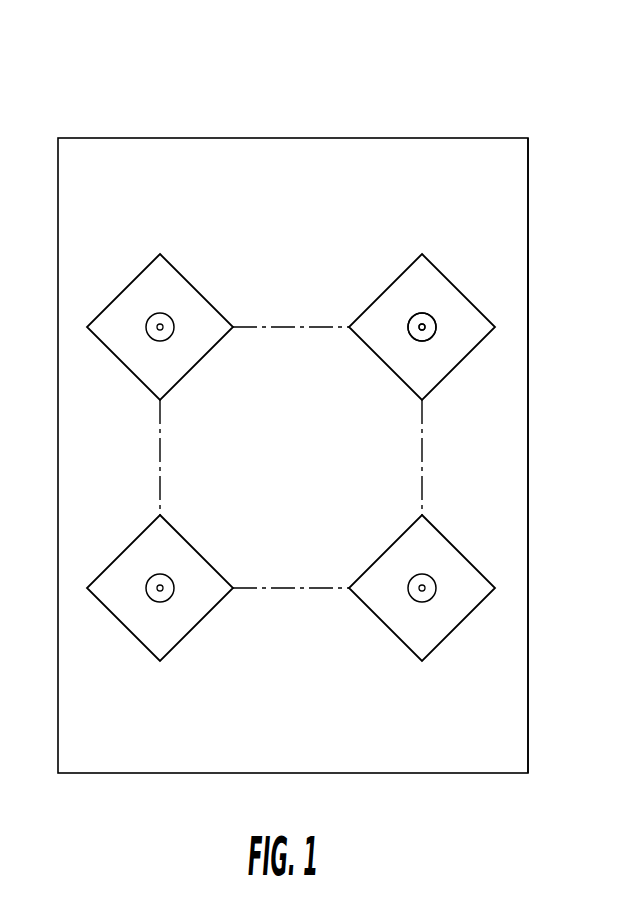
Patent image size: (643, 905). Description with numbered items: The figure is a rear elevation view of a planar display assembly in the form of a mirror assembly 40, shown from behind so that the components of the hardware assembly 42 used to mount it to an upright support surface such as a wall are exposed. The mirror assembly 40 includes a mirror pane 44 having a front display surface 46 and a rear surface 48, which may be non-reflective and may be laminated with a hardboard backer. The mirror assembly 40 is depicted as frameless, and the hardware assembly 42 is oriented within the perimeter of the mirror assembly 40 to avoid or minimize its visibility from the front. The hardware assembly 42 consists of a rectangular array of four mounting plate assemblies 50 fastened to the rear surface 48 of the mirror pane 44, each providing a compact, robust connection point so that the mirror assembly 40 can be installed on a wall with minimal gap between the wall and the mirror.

The mirror assembly 40 is at (395, 130).
The hardware assembly 42 is at (468, 285).
The mirror pane 44 is at (530, 172).
The front display surface 46 is at (530, 294).
The rear surface 48 is at (266, 220).
The mounting plate assembly 50 is at (452, 354).